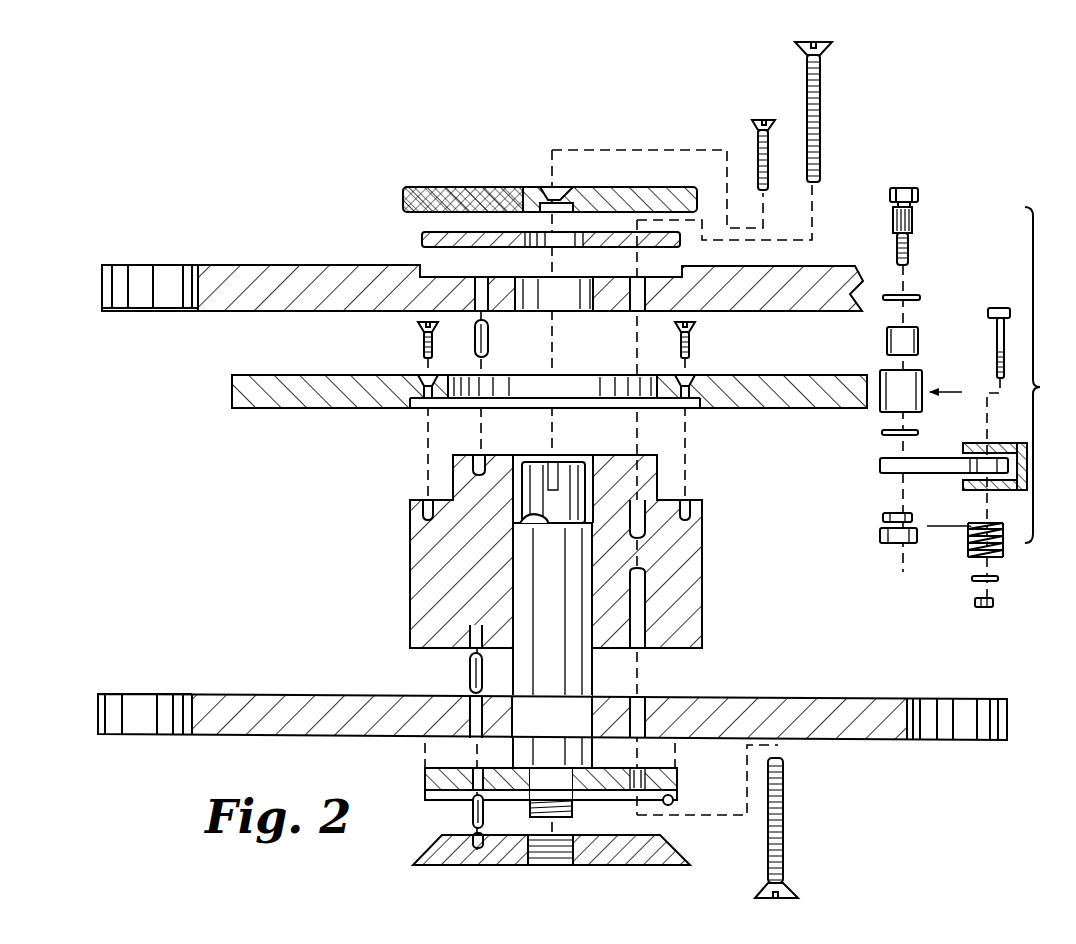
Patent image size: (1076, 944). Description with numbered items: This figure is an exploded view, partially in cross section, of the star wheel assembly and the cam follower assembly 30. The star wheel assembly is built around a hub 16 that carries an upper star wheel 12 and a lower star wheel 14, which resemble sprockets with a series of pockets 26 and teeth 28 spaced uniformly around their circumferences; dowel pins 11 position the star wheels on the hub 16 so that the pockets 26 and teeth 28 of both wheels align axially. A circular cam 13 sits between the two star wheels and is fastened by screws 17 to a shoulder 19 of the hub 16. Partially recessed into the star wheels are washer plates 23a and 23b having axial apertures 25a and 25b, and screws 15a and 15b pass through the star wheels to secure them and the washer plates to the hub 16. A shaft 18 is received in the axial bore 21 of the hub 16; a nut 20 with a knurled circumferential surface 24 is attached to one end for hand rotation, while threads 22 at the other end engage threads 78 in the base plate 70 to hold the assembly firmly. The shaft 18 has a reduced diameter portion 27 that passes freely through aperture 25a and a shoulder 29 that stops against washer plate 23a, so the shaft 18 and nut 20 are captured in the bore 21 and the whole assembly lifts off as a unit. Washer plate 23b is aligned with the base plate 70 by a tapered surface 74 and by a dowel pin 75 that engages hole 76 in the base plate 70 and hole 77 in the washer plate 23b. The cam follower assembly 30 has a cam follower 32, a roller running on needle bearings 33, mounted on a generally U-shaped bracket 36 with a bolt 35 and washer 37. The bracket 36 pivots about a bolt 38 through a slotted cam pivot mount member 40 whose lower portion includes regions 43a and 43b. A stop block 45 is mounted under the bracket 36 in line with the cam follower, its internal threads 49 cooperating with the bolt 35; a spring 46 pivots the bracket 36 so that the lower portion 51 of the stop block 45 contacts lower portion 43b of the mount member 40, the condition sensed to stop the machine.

The dowel pins 11 is at (490, 338).
The upper star wheel 12 is at (338, 266).
The cam 13 is at (360, 375).
The lower star wheel 14 is at (310, 694).
The screw 15a is at (820, 86).
The screw 15b is at (783, 839).
The hub 16 is at (572, 533).
The screws 17 is at (418, 341).
The shaft 18 is at (570, 672).
The shoulder 19 is at (425, 500).
The nut 20 is at (525, 171).
The axial bore 21 is at (590, 470).
The threads 22 is at (573, 815).
The washer plate 23a is at (521, 202).
The washer plate 23b is at (533, 772).
The circumferential surface 24 is at (405, 196).
The axial aperture 25a is at (565, 238).
The axial aperture 25b is at (592, 768).
The pockets 26 is at (163, 280).
The reduced diameter portion 27 is at (519, 470).
The teeth 28 is at (102, 284).
The shoulder 29 is at (530, 523).
The cam follower assembly 30 is at (1047, 400).
The cam follower 32 is at (922, 377).
The needle bearings 33 is at (918, 341).
The bolts 35 is at (912, 230).
The bracket 36 is at (940, 458).
The washers 37 is at (920, 297).
The bolt 38 is at (1013, 318).
The cam pivot mount member 40 is at (975, 466).
The lower portion 43a is at (1006, 445).
The lower portion 43b is at (975, 490).
The stop block 45 is at (862, 528).
The spring 46 is at (968, 546).
The internal threads 49 is at (898, 562).
The lower portion 51 is at (883, 544).
The base plate 70 is at (519, 866).
The tapered surface 74 is at (680, 802).
The dowel pin 75 is at (473, 812).
The hole 76 is at (483, 840).
The hole 77 is at (492, 760).
The threads 78 is at (530, 865).